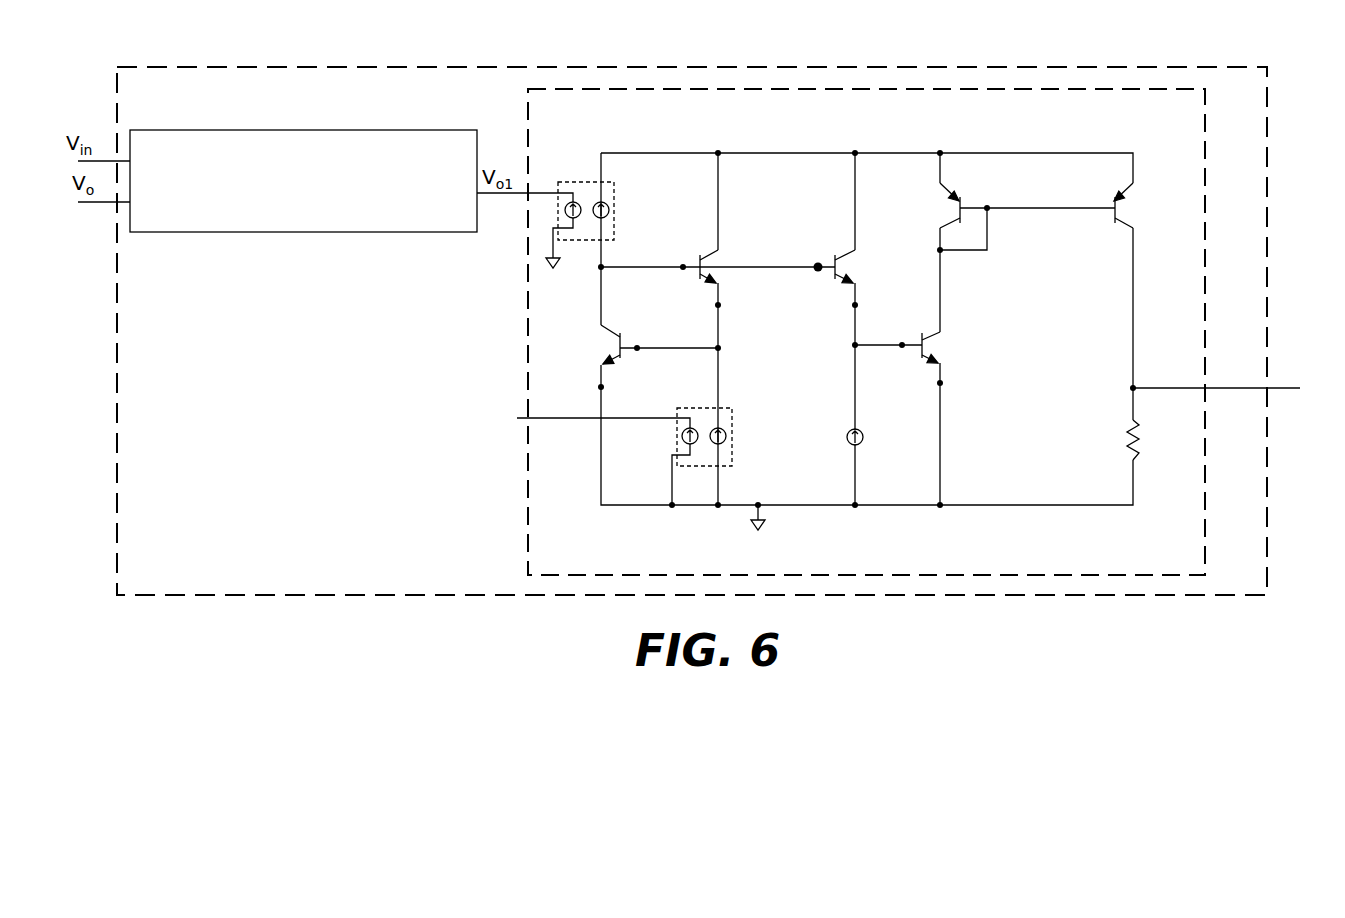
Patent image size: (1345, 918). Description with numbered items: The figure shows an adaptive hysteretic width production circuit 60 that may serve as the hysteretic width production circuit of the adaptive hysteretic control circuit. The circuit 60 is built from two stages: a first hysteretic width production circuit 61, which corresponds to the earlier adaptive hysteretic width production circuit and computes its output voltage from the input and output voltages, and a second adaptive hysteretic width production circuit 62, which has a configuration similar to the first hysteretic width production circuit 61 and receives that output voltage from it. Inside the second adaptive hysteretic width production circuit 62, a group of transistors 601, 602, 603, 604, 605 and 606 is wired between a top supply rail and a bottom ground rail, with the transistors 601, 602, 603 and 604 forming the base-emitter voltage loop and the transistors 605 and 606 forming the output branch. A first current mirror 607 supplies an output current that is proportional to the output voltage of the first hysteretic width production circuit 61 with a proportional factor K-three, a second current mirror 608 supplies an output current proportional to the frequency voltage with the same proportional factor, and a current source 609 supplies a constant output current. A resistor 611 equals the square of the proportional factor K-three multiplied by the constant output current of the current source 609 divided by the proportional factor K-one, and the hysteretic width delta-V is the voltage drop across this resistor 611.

The adaptive hysteretic width production circuit 60 is at (115, 452).
The first hysteretic width production circuit 61 is at (310, 232).
The second adaptive hysteretic width production circuit 62 is at (528, 356).
The transistor 601 is at (601, 339).
The transistor 602 is at (723, 262).
The transistor 603 is at (845, 262).
The transistor 604 is at (935, 348).
The transistor 605 is at (955, 200).
The transistor 606 is at (1128, 212).
The current mirror 607 is at (615, 192).
The current mirror 608 is at (735, 416).
The current source 609 is at (874, 404).
The resistor 611 is at (1152, 460).